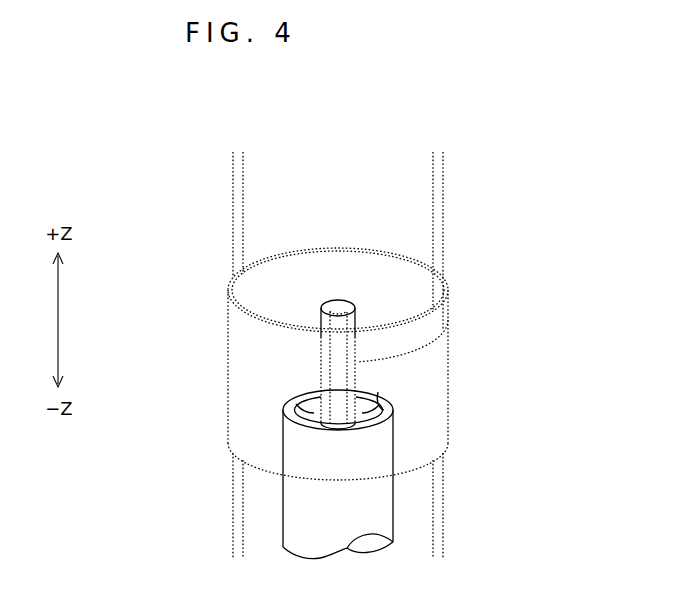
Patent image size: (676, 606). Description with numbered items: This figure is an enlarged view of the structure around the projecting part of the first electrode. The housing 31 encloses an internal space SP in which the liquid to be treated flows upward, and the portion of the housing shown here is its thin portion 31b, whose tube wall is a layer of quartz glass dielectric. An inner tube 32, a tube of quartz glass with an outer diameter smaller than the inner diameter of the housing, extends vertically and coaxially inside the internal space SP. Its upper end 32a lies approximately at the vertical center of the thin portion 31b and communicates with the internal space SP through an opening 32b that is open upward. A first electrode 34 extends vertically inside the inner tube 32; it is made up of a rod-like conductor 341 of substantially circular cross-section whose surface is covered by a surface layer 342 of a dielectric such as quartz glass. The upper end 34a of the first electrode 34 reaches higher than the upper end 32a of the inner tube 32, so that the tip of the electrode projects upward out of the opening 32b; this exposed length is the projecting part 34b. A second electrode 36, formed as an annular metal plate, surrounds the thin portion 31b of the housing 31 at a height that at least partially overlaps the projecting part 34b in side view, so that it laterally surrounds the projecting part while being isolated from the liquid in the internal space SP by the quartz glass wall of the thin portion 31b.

The housing 31 is at (232, 193).
The thin portion 31b is at (287, 355).
The inner tube 32 is at (397, 450).
The upper end of the inner tube 32a is at (393, 408).
The opening 32b is at (378, 398).
The first electrode 34 is at (401, 315).
The conductor 341 is at (448, 321).
The surface layer 342 is at (373, 315).
The upper end of the first electrode 34a is at (335, 302).
The projecting part 34b is at (314, 309).
The second electrode 36 is at (227, 393).
The internal space SP is at (405, 212).